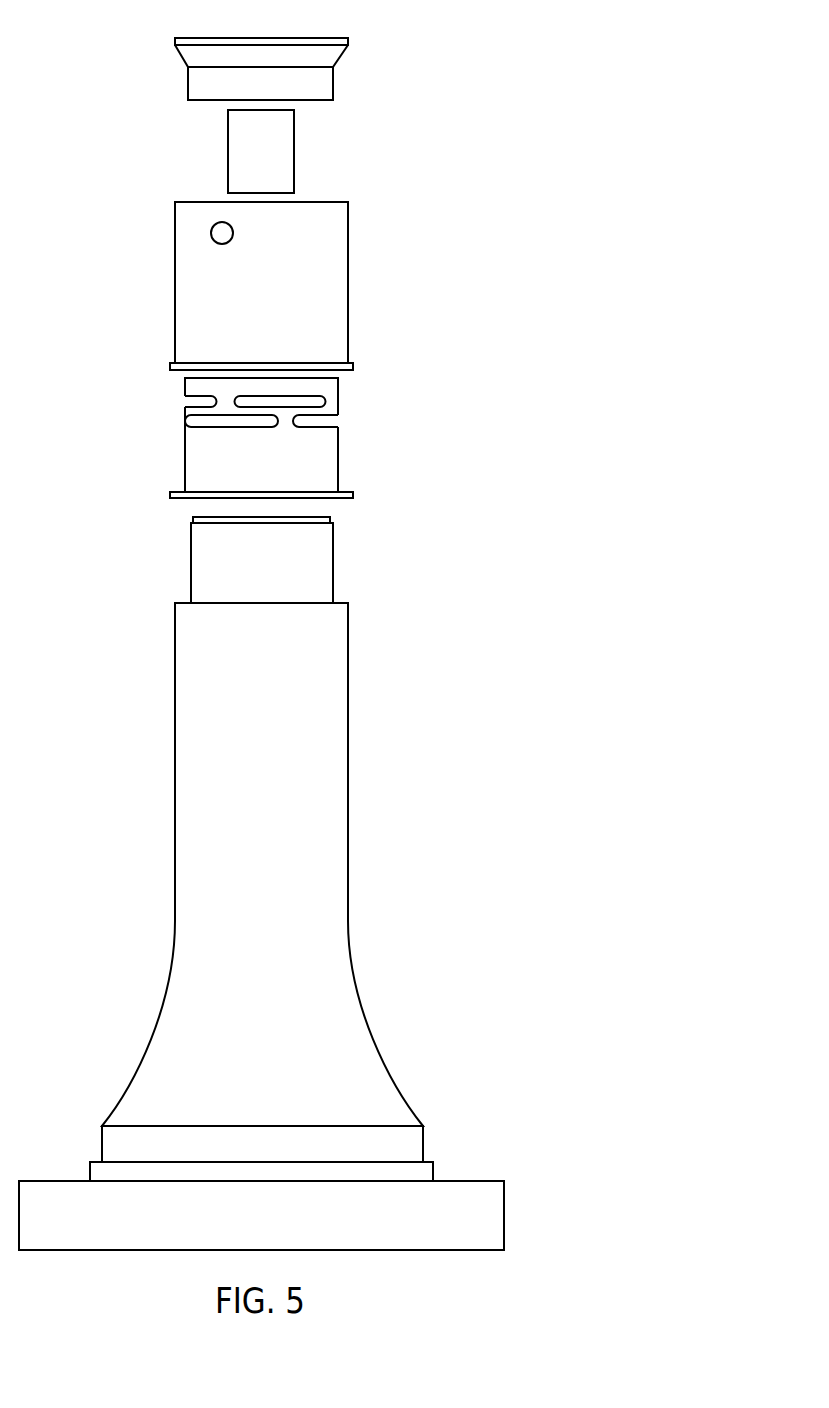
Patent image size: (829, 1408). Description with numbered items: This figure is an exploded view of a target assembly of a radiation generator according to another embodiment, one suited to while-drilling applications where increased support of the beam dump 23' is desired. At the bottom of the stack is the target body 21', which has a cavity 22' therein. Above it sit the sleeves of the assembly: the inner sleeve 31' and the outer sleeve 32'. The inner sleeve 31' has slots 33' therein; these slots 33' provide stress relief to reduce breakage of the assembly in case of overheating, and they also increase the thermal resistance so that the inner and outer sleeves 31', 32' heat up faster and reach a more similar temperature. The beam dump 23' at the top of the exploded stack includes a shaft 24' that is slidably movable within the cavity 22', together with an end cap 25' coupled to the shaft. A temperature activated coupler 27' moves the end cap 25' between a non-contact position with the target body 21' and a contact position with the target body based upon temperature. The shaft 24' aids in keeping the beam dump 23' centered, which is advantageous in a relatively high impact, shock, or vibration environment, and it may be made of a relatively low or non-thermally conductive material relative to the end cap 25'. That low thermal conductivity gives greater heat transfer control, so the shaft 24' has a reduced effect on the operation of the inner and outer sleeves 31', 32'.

The target body 21' is at (261, 926).
The cavity 22' is at (196, 546).
The beam dump 23' is at (155, 166).
The shaft 24' is at (329, 151).
The end cap 25' is at (302, 52).
The temperature activated coupler 27' is at (419, 346).
The inner sleeve 31' is at (275, 438).
The outer sleeve 32' is at (206, 286).
The slots 33' is at (337, 415).